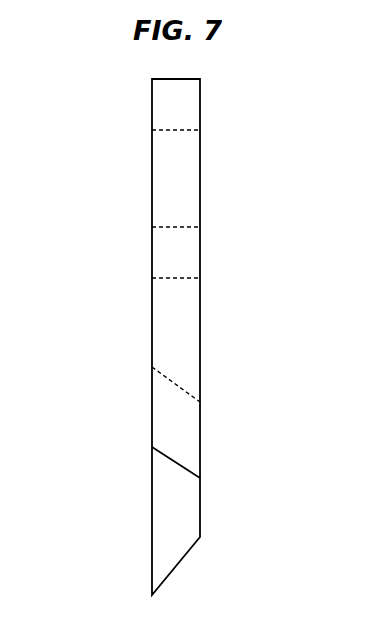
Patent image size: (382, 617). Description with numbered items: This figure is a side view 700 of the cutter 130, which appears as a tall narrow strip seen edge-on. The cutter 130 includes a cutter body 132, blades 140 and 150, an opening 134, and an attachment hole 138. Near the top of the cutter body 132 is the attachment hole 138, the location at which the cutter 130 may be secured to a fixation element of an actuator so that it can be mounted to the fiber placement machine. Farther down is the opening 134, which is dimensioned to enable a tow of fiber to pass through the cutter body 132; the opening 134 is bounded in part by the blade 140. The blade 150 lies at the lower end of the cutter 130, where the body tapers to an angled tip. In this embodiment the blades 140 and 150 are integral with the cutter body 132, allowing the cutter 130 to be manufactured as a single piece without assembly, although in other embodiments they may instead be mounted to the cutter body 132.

The cutter 130 is at (76, 118).
The cutter body 132 is at (180, 102).
The opening 134 is at (185, 332).
The attachment hole 138 is at (180, 176).
The blade 140 is at (172, 416).
The blade 150 is at (183, 558).
The side view 700 is at (270, 540).